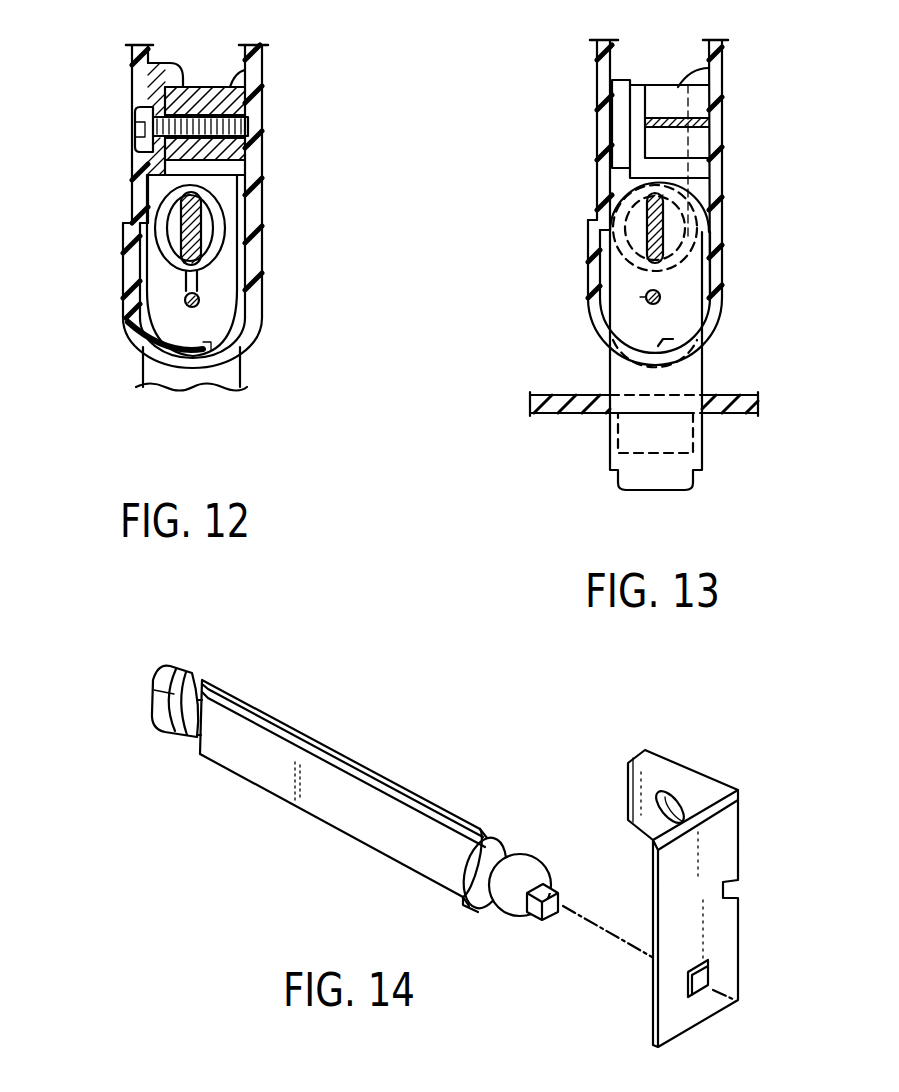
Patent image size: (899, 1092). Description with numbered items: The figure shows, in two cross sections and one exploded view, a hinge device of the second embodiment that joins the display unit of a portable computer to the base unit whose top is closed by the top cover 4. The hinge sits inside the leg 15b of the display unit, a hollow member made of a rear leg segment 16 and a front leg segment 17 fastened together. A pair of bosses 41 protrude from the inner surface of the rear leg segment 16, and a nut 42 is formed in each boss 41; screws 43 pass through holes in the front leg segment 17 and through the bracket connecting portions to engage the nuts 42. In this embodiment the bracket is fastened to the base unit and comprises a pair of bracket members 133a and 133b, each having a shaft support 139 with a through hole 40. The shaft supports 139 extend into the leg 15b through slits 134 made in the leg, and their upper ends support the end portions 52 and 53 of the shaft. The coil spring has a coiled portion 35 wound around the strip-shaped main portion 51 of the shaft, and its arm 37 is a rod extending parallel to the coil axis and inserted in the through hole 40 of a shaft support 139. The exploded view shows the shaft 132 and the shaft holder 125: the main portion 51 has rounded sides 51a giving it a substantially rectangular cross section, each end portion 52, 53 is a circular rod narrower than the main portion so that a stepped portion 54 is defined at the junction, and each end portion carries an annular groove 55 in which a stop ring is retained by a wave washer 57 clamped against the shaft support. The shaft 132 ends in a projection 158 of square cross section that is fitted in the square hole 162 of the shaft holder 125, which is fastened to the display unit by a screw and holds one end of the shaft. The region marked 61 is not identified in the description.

In FIG. 13, the top cover 4 is at (733, 412).
In FIG. 12, the leg 15b is at (190, 368).
In FIG. 13, the leg 15b is at (615, 352).
In FIG. 12, the rear leg segment 16 is at (262, 200).
In FIG. 13, the rear leg segment 16 is at (722, 150).
In FIG. 12, the front leg segment 17 is at (127, 279).
In FIG. 13, the front leg segment 17 is at (600, 190).
In FIG. 12, the coiled portion 35 is at (218, 253).
In FIG. 12, the arm 37 is at (182, 305).
In FIG. 13, the arm 37 is at (640, 299).
In FIG. 12, the through hole 40 is at (200, 302).
In FIG. 13, the through hole 40 is at (662, 296).
In FIG. 12, the boss 41 is at (238, 88).
In FIG. 13, the boss 41 is at (695, 86).
In FIG. 12, the nut 42 is at (248, 140).
In FIG. 12, the screw 43 is at (133, 120).
In FIG. 12, the main portion 51 is at (197, 233).
In FIG. 13, the main portion 51 is at (668, 212).
In FIG. 14, the main portion 51 is at (330, 785).
In FIG. 14, the side 51a is at (378, 798).
In FIG. 14, the end portion 52 is at (525, 868).
In FIG. 13, the end portion 53 is at (700, 245).
In FIG. 14, the end portion 53 is at (182, 740).
In FIG. 14, the stepped portion 54 is at (196, 752).
In FIG. 14, the annular groove 55 is at (166, 672).
In FIG. 13, the wave washer 57 is at (620, 252).
In FIG. 13, the slot 61 is at (628, 436).
In FIG. 12, the shaft holder 125 is at (142, 72).
In FIG. 13, the shaft holder 125 is at (680, 175).
In FIG. 14, the shaft holder 125 is at (720, 920).
In FIG. 14, the shaft 132 is at (340, 833).
In FIG. 12, the bracket member 133a is at (242, 372).
In FIG. 13, the bracket member 133b is at (704, 373).
In FIG. 13, the slit 134 is at (713, 318).
In FIG. 12, the shaft support 139 is at (152, 262).
In FIG. 13, the shaft support 139 is at (620, 276).
In FIG. 14, the projection 158 is at (563, 900).
In FIG. 14, the square hole 162 is at (690, 985).